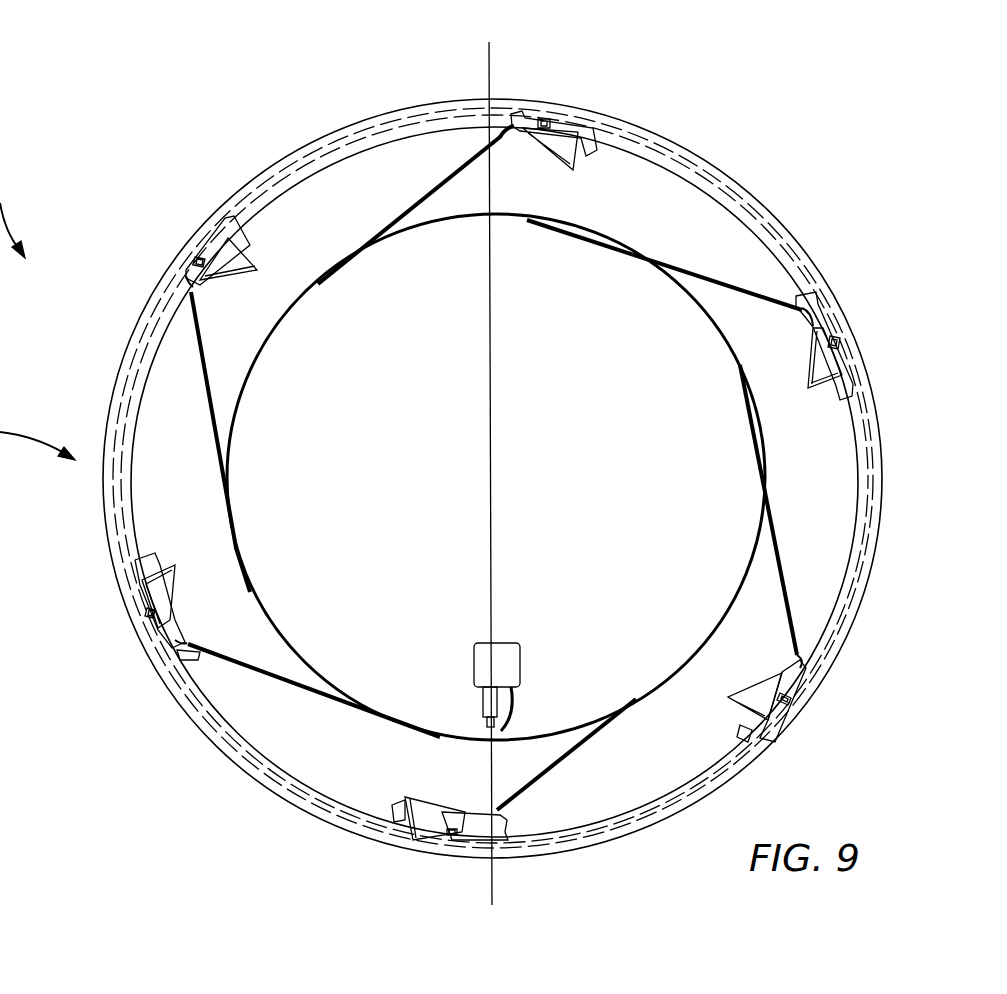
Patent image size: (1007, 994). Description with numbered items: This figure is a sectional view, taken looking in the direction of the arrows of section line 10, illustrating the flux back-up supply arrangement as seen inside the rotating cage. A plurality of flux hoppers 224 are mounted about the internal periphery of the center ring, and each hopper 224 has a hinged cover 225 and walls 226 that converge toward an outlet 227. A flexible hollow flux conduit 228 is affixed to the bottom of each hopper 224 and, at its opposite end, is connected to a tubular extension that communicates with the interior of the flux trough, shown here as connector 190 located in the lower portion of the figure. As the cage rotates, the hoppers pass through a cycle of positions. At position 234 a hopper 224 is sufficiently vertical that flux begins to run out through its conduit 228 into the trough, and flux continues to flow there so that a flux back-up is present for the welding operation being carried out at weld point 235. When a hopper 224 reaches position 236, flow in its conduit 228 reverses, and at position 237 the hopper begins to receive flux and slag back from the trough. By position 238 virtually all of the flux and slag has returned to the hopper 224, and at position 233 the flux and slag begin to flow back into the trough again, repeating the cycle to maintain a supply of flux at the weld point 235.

The section line 10- 10 is at (582, 58).
The electrical connector 190 is at (509, 641).
The flux hopper 224 is at (222, 265).
The hinged cover 225 is at (250, 260).
The walls 226 is at (242, 274).
The outlet 227 is at (185, 268).
The flexible hollow flux conduit 228 is at (208, 402).
The position 233 is at (580, 98).
The position 234 is at (170, 248).
The position 235 is at (522, 723).
The position 236 is at (390, 854).
The position 237 is at (808, 712).
The position 238 is at (862, 336).